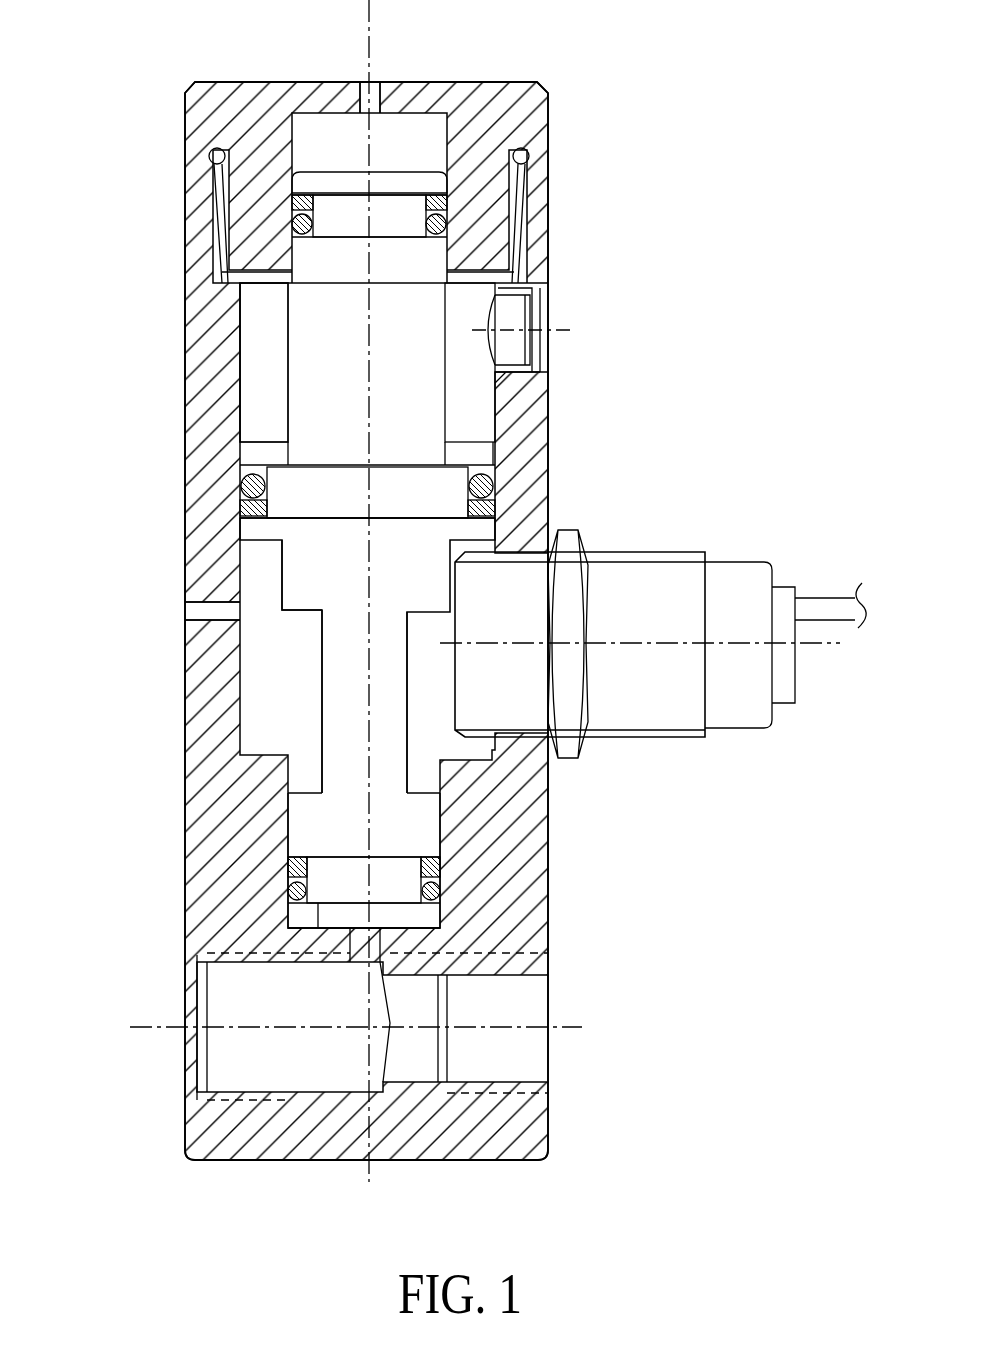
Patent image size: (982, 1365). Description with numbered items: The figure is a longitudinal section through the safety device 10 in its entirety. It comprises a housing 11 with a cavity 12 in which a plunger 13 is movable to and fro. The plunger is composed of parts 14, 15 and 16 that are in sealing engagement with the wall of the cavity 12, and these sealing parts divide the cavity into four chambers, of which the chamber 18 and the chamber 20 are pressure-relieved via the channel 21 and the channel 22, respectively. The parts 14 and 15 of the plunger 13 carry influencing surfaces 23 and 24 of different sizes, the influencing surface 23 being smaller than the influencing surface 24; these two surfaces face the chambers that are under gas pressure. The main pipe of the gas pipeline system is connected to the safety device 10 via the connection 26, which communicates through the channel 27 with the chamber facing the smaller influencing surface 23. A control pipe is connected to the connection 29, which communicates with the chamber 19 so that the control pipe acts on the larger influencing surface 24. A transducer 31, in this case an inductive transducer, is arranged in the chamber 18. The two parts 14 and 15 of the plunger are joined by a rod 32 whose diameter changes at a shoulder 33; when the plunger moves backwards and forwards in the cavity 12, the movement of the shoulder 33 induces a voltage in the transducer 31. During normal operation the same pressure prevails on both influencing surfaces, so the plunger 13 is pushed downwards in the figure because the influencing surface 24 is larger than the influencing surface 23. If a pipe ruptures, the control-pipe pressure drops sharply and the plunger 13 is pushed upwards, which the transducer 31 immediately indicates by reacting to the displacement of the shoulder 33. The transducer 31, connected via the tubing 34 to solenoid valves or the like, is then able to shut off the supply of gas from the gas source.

The safety device 10 is at (172, 535).
The housing 11 is at (200, 352).
The cavity 12 is at (268, 412).
The plunger 13 is at (412, 392).
The plunger part 14 is at (413, 837).
The plunger part 15 is at (432, 497).
The plunger part 16 is at (400, 217).
The chamber 18 is at (265, 695).
The chamber 19 is at (258, 322).
The chamber 20 is at (409, 140).
The channel 21 is at (198, 611).
The channel 22 is at (374, 95).
The influencing surface 23 is at (287, 950).
The influencing surface 24 is at (497, 433).
The connection 26 is at (515, 1053).
The channel 27 is at (357, 953).
The connection 29 is at (523, 327).
The transducer 31 is at (645, 710).
The rod 32 is at (335, 727).
The shoulder 33 is at (265, 645).
The tubing 34 is at (820, 605).